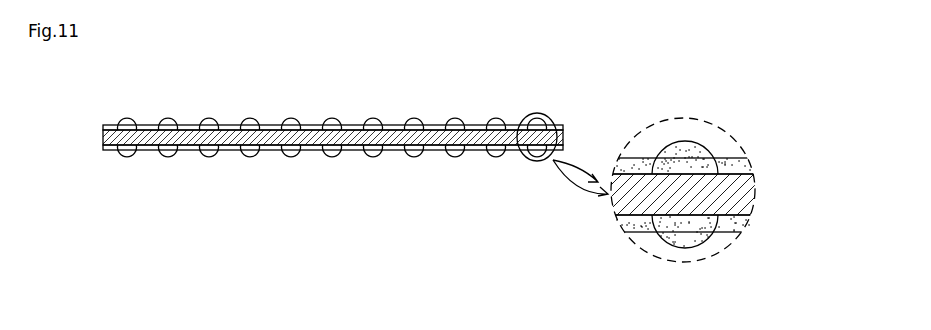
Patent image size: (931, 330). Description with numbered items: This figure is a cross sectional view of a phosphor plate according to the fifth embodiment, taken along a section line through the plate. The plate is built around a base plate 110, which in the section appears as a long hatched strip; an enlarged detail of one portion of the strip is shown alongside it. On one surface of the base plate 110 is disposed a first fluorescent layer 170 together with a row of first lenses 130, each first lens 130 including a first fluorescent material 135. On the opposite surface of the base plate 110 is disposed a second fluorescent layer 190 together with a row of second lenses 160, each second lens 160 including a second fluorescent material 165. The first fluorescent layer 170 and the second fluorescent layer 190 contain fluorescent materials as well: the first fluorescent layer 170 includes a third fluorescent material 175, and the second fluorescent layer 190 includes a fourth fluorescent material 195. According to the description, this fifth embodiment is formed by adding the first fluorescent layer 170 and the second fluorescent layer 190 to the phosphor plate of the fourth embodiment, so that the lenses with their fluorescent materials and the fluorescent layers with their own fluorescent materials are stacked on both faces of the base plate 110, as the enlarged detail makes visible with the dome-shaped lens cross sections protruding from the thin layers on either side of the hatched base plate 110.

The base plate 110 is at (102, 138).
The first lens 130 is at (125, 118).
The first fluorescent material 135 is at (675, 153).
The second lens 160 is at (128, 158).
The second fluorescent material 165 is at (663, 242).
The first fluorescent layer 170 is at (152, 123).
The third fluorescent material 175 is at (619, 162).
The second fluorescent layer 190 is at (148, 152).
The fourth fluorescent material 195 is at (621, 232).